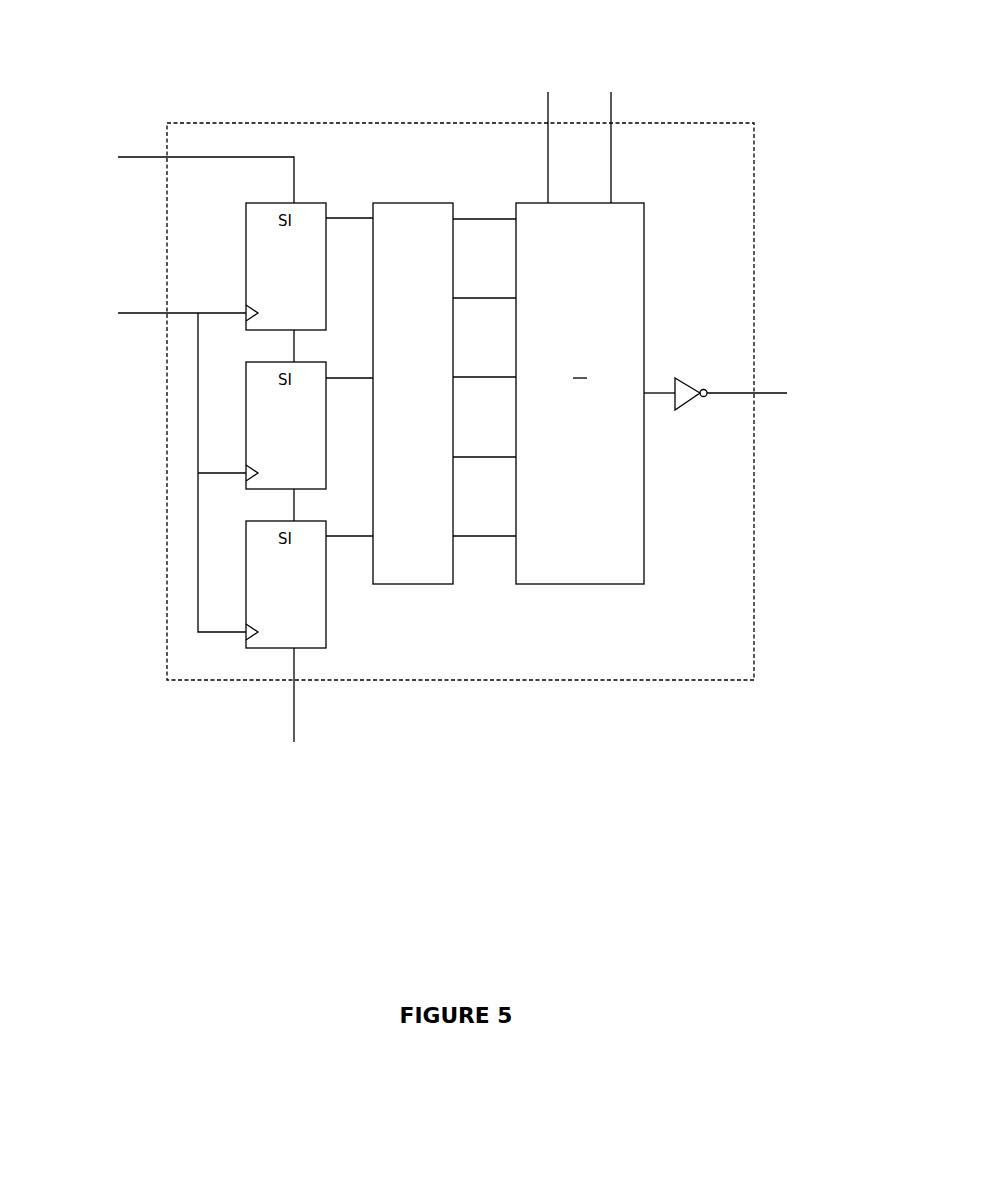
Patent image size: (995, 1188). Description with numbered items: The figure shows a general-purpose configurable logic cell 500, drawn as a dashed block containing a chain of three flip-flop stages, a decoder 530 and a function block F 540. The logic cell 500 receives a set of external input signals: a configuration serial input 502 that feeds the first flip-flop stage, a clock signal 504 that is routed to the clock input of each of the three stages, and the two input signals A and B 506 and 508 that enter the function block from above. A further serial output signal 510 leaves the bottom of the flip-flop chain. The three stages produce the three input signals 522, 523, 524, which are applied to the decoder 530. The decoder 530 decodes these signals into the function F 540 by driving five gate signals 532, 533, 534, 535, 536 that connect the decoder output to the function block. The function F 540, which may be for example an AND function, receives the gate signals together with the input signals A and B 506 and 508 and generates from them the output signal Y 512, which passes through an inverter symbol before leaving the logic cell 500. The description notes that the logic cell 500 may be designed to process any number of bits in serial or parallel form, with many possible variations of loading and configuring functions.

The logic cell 500 is at (716, 116).
The external input signal 502 is at (148, 153).
The clock signal 504 is at (148, 311).
The input signal A 506 is at (547, 60).
The input signal B 508 is at (612, 60).
The configuration serial output CFG_SO 510 is at (277, 748).
The output signal Y 512 is at (767, 390).
The input signal Q0 522 is at (344, 196).
The input signal Q1 523 is at (340, 347).
The input signal Q2 524 is at (344, 510).
The decoder 530 is at (413, 393).
The gate signal S0 532 is at (487, 193).
The gate signal S1 533 is at (487, 281).
The gate signal S2 534 is at (487, 359).
The gate signal S3 535 is at (487, 438).
The gate signal S4 536 is at (487, 516).
The function F 540 is at (580, 393).